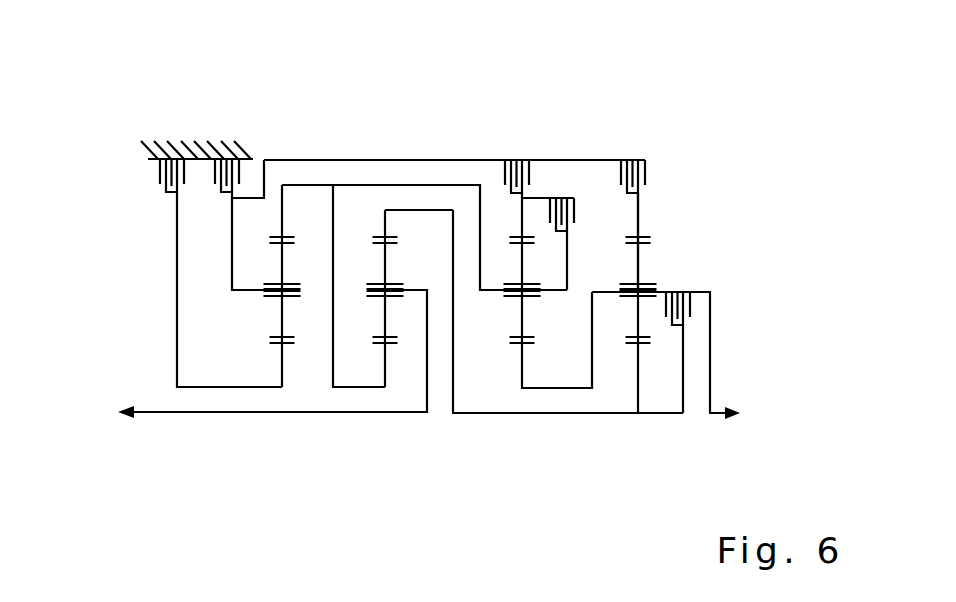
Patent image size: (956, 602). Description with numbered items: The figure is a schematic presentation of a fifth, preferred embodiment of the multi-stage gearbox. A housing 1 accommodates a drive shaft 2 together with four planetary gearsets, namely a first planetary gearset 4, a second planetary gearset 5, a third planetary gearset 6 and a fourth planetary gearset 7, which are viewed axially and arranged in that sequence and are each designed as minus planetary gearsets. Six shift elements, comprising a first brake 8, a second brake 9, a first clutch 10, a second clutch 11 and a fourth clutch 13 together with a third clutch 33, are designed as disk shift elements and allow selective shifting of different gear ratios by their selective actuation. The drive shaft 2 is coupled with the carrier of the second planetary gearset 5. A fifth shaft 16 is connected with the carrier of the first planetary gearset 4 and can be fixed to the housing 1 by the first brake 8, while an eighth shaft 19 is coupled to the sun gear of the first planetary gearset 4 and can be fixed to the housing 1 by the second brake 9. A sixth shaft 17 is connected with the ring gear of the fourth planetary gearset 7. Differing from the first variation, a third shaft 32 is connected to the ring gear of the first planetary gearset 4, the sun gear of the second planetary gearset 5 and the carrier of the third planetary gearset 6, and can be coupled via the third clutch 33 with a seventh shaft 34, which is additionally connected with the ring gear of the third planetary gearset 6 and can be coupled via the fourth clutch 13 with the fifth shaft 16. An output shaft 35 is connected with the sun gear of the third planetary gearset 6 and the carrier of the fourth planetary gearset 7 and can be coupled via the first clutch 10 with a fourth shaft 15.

The housing 1 is at (183, 148).
The drive shaft 2 is at (347, 413).
The first planetary gearset 4 is at (285, 150).
The second planetary gearset 5 is at (388, 150).
The third planetary gearset 6 is at (522, 150).
The fourth planetary gearset 7 is at (639, 150).
The first brake 8 is at (228, 174).
The second brake 9 is at (170, 178).
The first clutch 10 is at (677, 325).
The second clutch 11 is at (640, 173).
The fourth clutch 13 is at (513, 173).
The fourth shaft 15 is at (472, 413).
The fifth shaft 16 is at (356, 160).
The sixth shaft 17 is at (642, 208).
The eighth shaft 19 is at (178, 327).
The third shaft 32 is at (312, 185).
The third clutch 33 is at (570, 202).
The seventh shaft 34 is at (542, 198).
The output shaft 35 is at (707, 370).